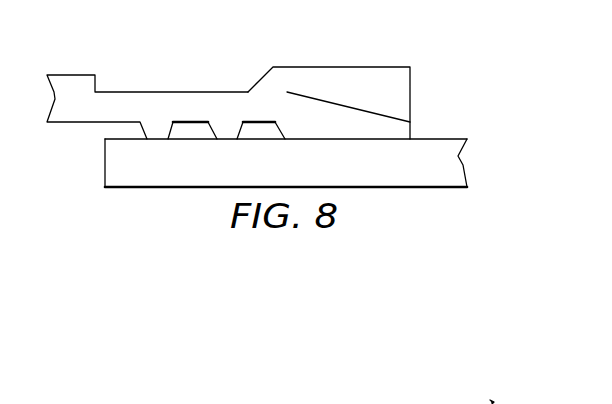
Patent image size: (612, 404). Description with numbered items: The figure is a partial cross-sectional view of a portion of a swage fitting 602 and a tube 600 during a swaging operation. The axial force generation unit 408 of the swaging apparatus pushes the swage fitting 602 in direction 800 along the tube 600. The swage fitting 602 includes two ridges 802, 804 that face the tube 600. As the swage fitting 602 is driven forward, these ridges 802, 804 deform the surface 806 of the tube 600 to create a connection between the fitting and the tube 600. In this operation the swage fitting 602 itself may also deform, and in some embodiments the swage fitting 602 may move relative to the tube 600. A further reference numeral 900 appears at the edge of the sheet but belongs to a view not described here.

The axial force generation unit 408 is at (342, 66).
The swage fitting 602 is at (135, 92).
The direction 800 is at (375, 177).
The ridge 802 is at (223, 130).
The ridge 804 is at (162, 130).
The surface 806 is at (103, 163).
The tube 600 is at (433, 188).
The assembly 900 is at (467, 403).